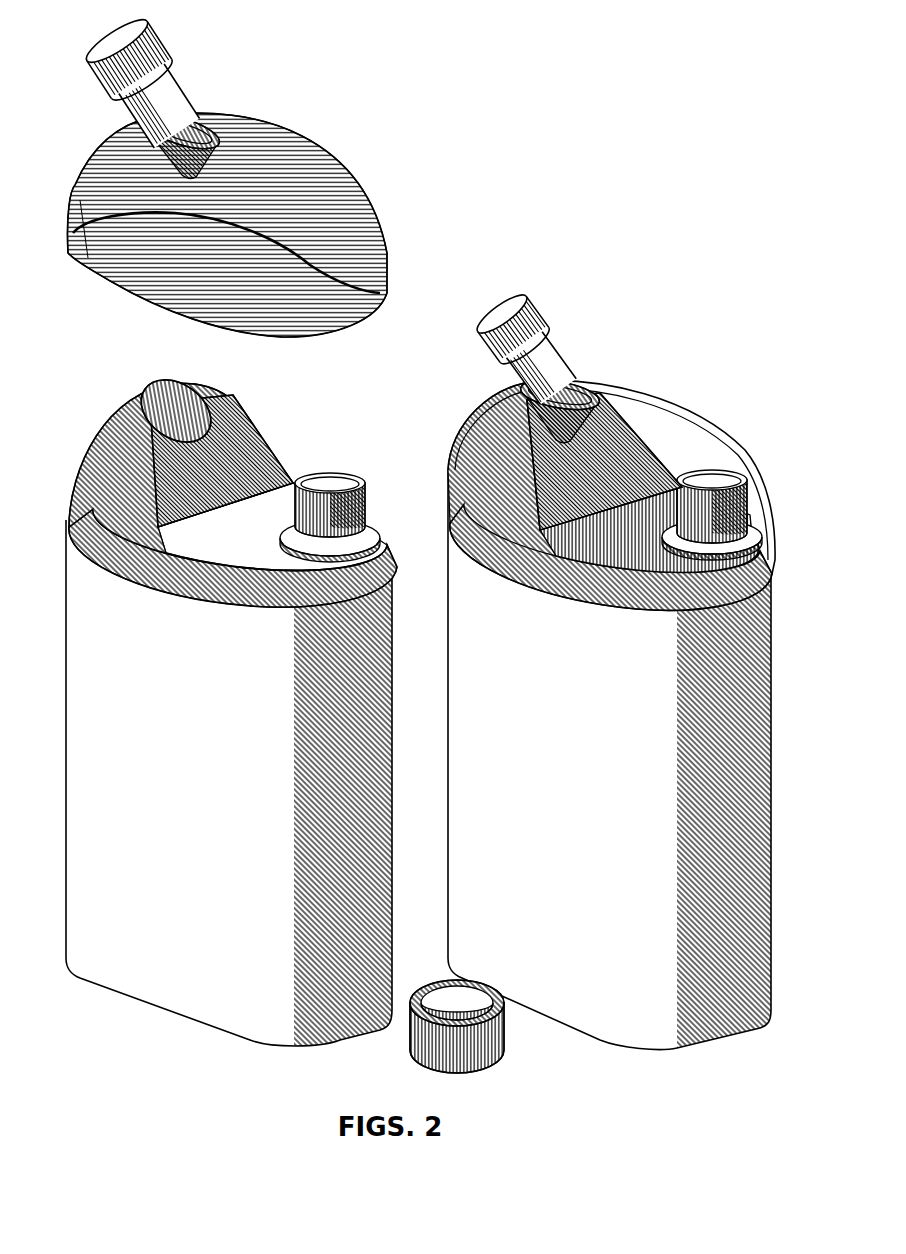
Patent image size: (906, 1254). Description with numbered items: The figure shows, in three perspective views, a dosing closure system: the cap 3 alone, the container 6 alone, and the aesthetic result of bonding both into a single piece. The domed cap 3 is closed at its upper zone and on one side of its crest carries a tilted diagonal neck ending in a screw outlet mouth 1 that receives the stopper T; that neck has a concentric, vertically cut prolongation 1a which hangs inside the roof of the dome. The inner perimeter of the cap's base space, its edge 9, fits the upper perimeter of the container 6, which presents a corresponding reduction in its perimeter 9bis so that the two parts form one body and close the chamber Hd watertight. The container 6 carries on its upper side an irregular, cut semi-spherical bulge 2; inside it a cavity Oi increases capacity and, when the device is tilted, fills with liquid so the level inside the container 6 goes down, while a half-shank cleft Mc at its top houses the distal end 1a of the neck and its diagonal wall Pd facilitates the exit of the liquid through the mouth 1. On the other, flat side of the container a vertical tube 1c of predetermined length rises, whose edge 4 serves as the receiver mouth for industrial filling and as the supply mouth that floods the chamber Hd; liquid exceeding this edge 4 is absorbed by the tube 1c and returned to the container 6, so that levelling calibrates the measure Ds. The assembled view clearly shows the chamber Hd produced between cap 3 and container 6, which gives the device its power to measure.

The screw outlet mouth 1 is at (150, 62).
The neck prolongation 1a is at (563, 390).
The tube 1c is at (333, 472).
The semi-spherical bulge 2 is at (83, 419).
The cap 3 is at (463, 418).
The edge of the tube 4 is at (362, 466).
The container 6 is at (525, 702).
The edge of the cap 9 is at (148, 300).
The perimeter reduction 9bis is at (534, 576).
The stopper T is at (156, 36).
The cavity Oi is at (114, 424).
The half shank cleft Mc is at (175, 404).
The diagonal wall Pd is at (233, 454).
The chamber Hd is at (281, 504).
The measure Ds is at (678, 436).